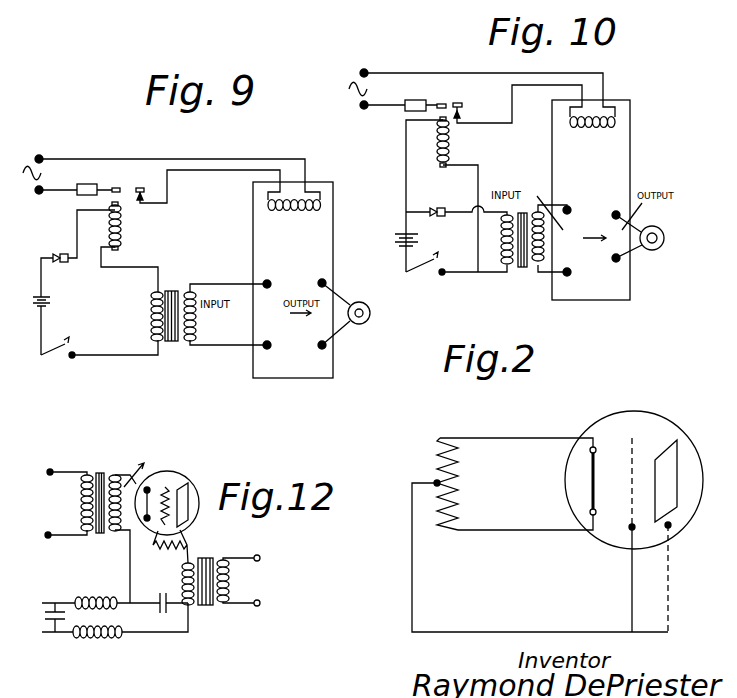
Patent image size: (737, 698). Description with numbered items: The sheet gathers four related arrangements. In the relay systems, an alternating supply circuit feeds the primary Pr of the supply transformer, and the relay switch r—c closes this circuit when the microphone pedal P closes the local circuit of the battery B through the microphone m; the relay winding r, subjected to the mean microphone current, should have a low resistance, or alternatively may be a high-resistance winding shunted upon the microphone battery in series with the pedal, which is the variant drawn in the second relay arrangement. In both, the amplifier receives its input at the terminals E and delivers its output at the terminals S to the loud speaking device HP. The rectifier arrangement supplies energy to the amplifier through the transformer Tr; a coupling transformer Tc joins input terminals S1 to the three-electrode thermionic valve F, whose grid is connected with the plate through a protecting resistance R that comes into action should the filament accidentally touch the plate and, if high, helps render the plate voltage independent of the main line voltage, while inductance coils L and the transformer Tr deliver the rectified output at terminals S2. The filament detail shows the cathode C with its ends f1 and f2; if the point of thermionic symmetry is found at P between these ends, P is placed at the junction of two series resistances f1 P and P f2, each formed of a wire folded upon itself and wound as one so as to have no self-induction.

In FIG. 9, the relay switch contact c is at (208, 186).
In FIG. 10, the relay switch contact c is at (517, 104).
In FIG. 9, the relay winding r is at (123, 226).
In FIG. 10, the relay winding r is at (450, 142).
In FIG. 9, the microphone m is at (60, 249).
In FIG. 10, the microphone m is at (435, 202).
In FIG. 9, the battery B is at (50, 301).
In FIG. 10, the battery B is at (414, 241).
In FIG. 9, the microphone pedal / point of thermionic symmetry P is at (58, 356).
In FIG. 10, the microphone pedal / point of thermionic symmetry P is at (425, 273).
In FIG. 2, the microphone pedal / point of thermionic symmetry P is at (453, 484).
In FIG. 9, the transformer Tr is at (293, 280).
In FIG. 12, the transformer Tr is at (205, 596).
In FIG. 10, the primary of the supply transformer Pr is at (591, 200).
In FIG. 9, the input terminals E is at (274, 314).
In FIG. 10, the input terminals E is at (574, 237).
In FIG. 9, the output terminals S is at (315, 309).
In FIG. 10, the output terminals S is at (610, 233).
In FIG. 9, the loud speaking device HP is at (349, 314).
In FIG. 10, the loud speaking device HP is at (642, 235).
In FIG. 12, the input terminals S1 is at (40, 499).
In FIG. 12, the output terminals S2 is at (252, 582).
In FIG. 12, the coupling transformer Tc is at (101, 494).
In FIG. 12, the vacuum tube F is at (167, 492).
In FIG. 12, the protecting resistance R is at (170, 548).
In FIG. 12, the inductance coils L is at (97, 615).
In FIG. 2, the cathode C is at (586, 481).
In FIG. 2, the cathode end f1 is at (607, 441).
In FIG. 2, the cathode end f2 is at (607, 517).